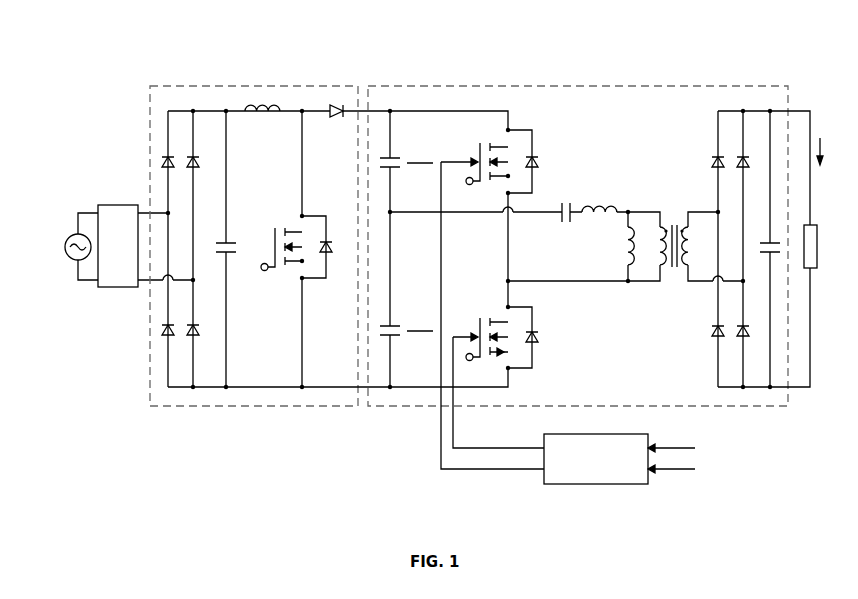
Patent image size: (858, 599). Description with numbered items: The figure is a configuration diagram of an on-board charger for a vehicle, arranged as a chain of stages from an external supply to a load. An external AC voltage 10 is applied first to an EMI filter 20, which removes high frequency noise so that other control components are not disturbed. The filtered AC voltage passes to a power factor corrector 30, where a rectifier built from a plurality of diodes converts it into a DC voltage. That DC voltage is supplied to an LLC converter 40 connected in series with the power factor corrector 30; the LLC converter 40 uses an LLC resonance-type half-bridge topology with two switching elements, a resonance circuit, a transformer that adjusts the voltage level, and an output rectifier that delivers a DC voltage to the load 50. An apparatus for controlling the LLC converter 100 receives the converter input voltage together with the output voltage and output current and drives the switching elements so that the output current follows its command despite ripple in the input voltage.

The AC voltage 10 is at (72, 236).
The EMI filter 20 is at (115, 205).
The power factor corrector 30 is at (263, 86).
The LLC converter 40 is at (624, 86).
The load 50 is at (815, 225).
The apparatus for controlling the LLC converter 100 is at (601, 484).